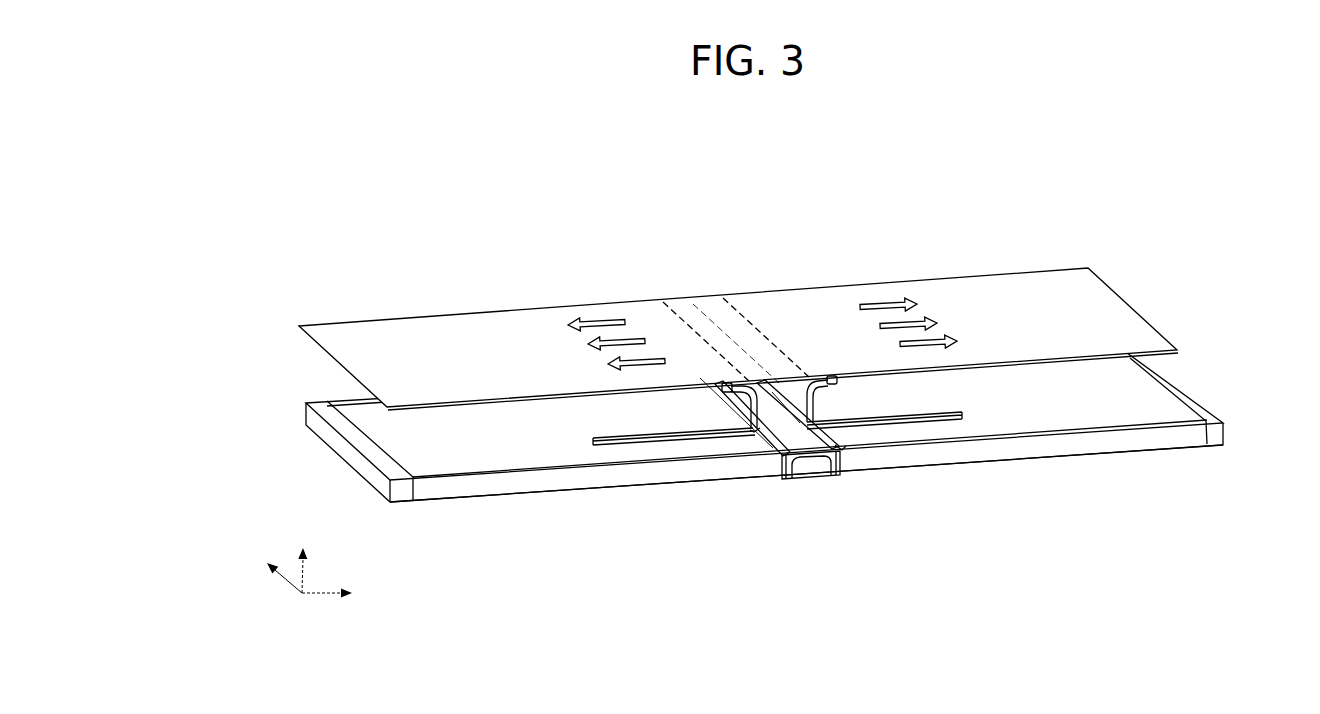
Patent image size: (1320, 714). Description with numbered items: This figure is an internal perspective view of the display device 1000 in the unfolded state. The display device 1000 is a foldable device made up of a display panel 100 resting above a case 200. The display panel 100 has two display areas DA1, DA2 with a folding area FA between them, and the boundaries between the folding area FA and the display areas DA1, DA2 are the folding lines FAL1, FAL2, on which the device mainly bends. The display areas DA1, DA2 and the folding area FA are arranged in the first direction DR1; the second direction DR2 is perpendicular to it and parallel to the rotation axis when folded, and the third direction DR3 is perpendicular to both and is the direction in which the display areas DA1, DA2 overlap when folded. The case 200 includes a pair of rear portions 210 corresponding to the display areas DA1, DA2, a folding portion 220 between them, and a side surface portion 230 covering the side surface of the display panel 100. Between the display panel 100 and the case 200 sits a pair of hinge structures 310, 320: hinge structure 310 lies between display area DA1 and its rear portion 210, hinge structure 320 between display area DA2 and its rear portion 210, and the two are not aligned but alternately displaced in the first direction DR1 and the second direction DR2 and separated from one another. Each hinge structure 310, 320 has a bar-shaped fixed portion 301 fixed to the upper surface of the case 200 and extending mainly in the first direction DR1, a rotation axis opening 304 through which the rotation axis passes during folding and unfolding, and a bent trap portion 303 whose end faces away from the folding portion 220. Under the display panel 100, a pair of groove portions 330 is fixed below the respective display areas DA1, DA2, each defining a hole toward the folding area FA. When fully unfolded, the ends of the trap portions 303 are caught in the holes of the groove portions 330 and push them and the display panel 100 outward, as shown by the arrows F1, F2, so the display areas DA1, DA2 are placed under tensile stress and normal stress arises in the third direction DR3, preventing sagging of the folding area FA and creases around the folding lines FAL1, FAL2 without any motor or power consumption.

The display device 1000 is at (528, 252).
The display panel 100 is at (1143, 304).
The case 200 is at (1196, 374).
The rear portion 210 is at (496, 460).
The folding portion 220 is at (838, 477).
The side surface portion 230 is at (1048, 445).
The fixed portion 301 is at (652, 442).
The trap portion 303 is at (722, 405).
The rotation axis opening 304 is at (755, 432).
The hinge structure 310 is at (617, 446).
The hinge structure 320 is at (957, 424).
The groove portion 330 is at (730, 383).
The display area DA1 is at (430, 337).
The display area DA2 is at (1032, 297).
The folding area FA is at (703, 315).
The folding line FAL1 is at (677, 308).
The folding line FAL2 is at (737, 308).
The arrow F1 is at (617, 322).
The arrow F2 is at (909, 304).
The first direction DR1 is at (347, 594).
The second direction DR2 is at (262, 570).
The third direction DR3 is at (302, 556).